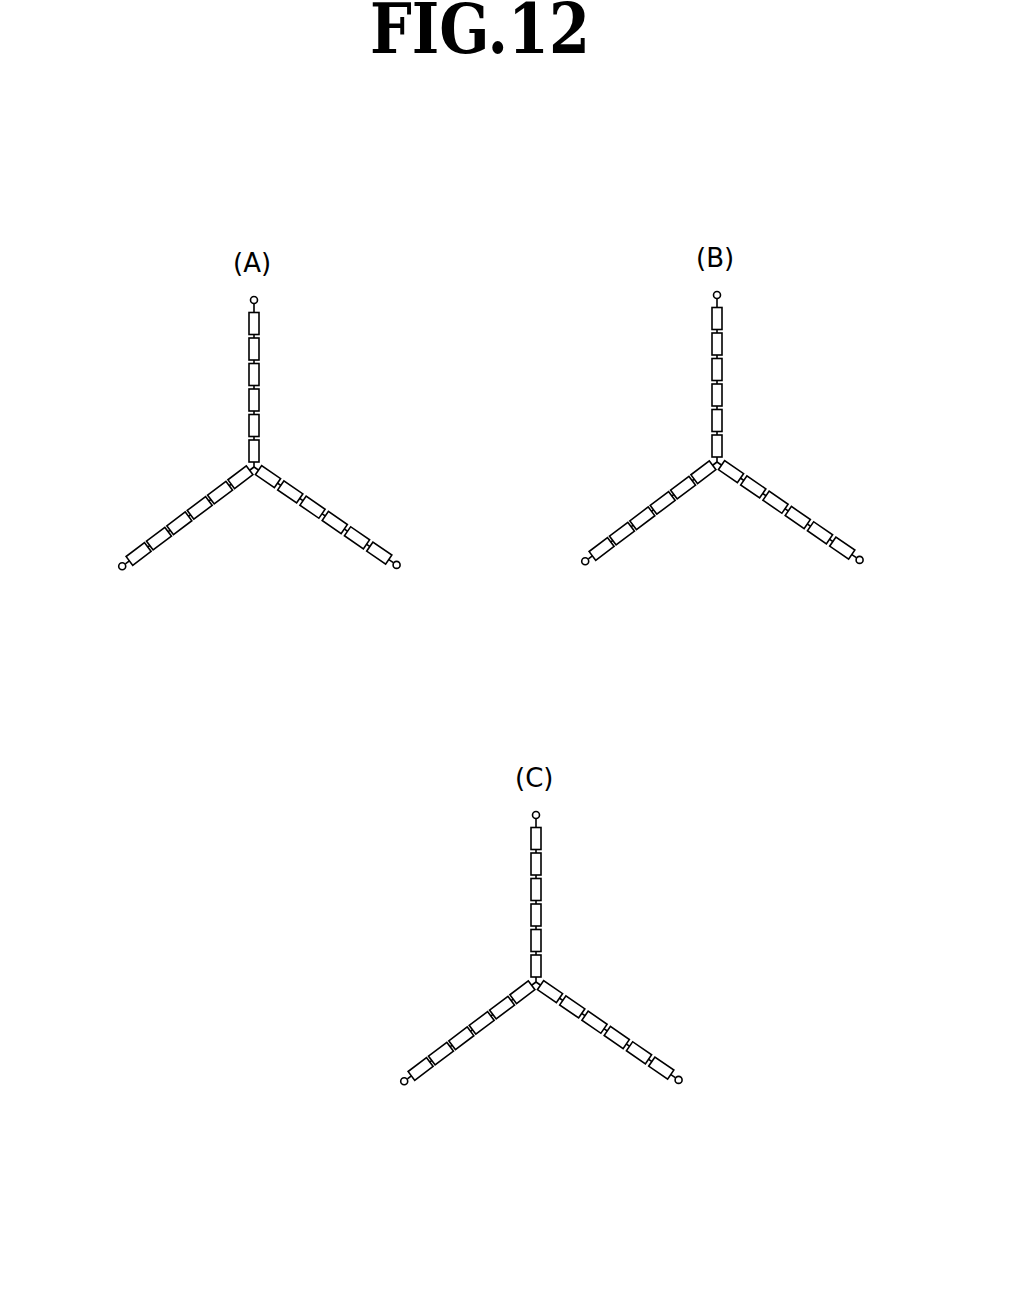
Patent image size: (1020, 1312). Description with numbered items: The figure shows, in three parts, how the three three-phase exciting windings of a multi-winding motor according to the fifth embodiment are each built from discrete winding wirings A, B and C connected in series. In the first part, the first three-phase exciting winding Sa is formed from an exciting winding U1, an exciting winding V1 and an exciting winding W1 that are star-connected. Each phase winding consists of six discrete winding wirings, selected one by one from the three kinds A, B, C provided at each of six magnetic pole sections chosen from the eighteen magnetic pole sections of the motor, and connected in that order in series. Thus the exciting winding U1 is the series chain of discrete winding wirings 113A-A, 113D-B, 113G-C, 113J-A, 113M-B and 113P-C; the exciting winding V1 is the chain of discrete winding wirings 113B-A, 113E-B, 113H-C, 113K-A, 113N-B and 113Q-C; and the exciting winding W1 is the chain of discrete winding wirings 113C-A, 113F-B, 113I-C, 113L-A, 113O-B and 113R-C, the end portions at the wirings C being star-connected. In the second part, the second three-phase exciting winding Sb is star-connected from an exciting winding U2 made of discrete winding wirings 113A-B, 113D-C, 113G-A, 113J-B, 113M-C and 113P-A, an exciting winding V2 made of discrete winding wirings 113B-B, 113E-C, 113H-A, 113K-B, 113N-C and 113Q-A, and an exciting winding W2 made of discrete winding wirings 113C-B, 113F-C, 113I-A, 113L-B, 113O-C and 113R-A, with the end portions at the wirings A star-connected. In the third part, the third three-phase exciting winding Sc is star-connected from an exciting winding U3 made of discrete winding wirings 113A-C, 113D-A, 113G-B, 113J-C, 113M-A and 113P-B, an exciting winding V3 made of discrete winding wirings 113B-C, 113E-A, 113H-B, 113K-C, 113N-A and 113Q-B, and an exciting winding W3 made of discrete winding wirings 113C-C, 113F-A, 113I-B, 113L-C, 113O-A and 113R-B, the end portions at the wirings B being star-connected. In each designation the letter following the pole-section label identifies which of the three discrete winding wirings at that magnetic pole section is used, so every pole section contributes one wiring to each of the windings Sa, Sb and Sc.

The first three-phase exciting winding Sa is at (133, 384).
The second three-phase exciting winding Sb is at (709, 485).
The third three-phase exciting winding Sc is at (533, 1005).
The exciting winding U1 is at (222, 331).
The exciting winding V1 is at (362, 522).
The exciting winding W1 is at (148, 570).
The exciting winding U2 is at (670, 377).
The exciting winding V2 is at (800, 512).
The exciting winding W2 is at (649, 545).
The exciting winding U3 is at (489, 897).
The exciting winding V3 is at (619, 1032).
The exciting winding W3 is at (468, 1065).
The discrete winding wiring A 113A-A is at (259, 324).
The discrete winding wiring B 113D-B is at (259, 349).
The discrete winding wiring C 113G-C is at (259, 374).
The discrete winding wiring A 113J-A is at (259, 400).
The discrete winding wiring B 113M-B is at (259, 426).
The discrete winding wiring C 113P-C is at (259, 451).
The discrete winding wiring C 113R-C is at (244, 466).
The discrete winding wiring B 113O-B is at (226, 481).
The discrete winding wiring A 113L-A is at (206, 497).
The discrete winding wiring C 113I-C is at (185, 512).
The discrete winding wiring B 113F-B is at (173, 473).
The discrete winding wiring A 113C-A is at (157, 497).
The discrete winding wiring C 113Q-C is at (265, 481).
The discrete winding wiring B 113N-B is at (287, 496).
The discrete winding wiring A 113K-A is at (309, 512).
The discrete winding wiring C 113H-C is at (332, 527).
The discrete winding wiring B 113E-B is at (354, 542).
The discrete winding wiring A 113B-A is at (376, 558).
The discrete winding wiring B 113A-B is at (765, 318).
The discrete winding wiring C 113D-C is at (778, 344).
The discrete winding wiring A 113G-A is at (765, 369).
The discrete winding wiring B 113J-B is at (771, 395).
The discrete winding wiring C 113M-C is at (766, 420).
The discrete winding wiring A 113P-A is at (774, 446).
The discrete winding wiring A 113R-A is at (669, 410).
The discrete winding wiring C 113O-C is at (653, 433).
The discrete winding wiring B 113L-B is at (633, 458).
The discrete winding wiring A 113I-A is at (614, 480).
The discrete winding wiring C 113F-C is at (594, 505).
The discrete winding wiring B 113C-B is at (575, 526).
The discrete winding wiring A 113Q-A is at (702, 499).
The discrete winding wiring C 113N-C is at (727, 520).
The discrete winding wiring B 113K-B is at (796, 584).
The discrete winding wiring A 113H-A is at (822, 576).
The discrete winding wiring C 113E-C is at (845, 570).
The discrete winding wiring B 113B-B is at (864, 565).
The discrete winding wiring C 113A-C is at (584, 838).
The discrete winding wiring A 113D-A is at (596, 864).
The discrete winding wiring B 113G-B is at (584, 889).
The discrete winding wiring C 113J-C is at (590, 915).
The discrete winding wiring A 113M-A is at (585, 940).
The discrete winding wiring B 113P-B is at (593, 966).
The discrete winding wiring B 113R-B is at (488, 930).
The discrete winding wiring A 113O-A is at (472, 953).
The discrete winding wiring C 113L-C is at (452, 978).
The discrete winding wiring B 113I-B is at (433, 1000).
The discrete winding wiring A 113F-A is at (413, 1025).
The discrete winding wiring C 113C-C is at (394, 1046).
The discrete winding wiring B 113Q-B is at (521, 1019).
The discrete winding wiring A 113N-A is at (546, 1040).
The discrete winding wiring C 113K-C is at (616, 1104).
The discrete winding wiring B 113H-B is at (640, 1096).
The discrete winding wiring A 113E-A is at (664, 1090).
The discrete winding wiring C 113B-C is at (683, 1085).